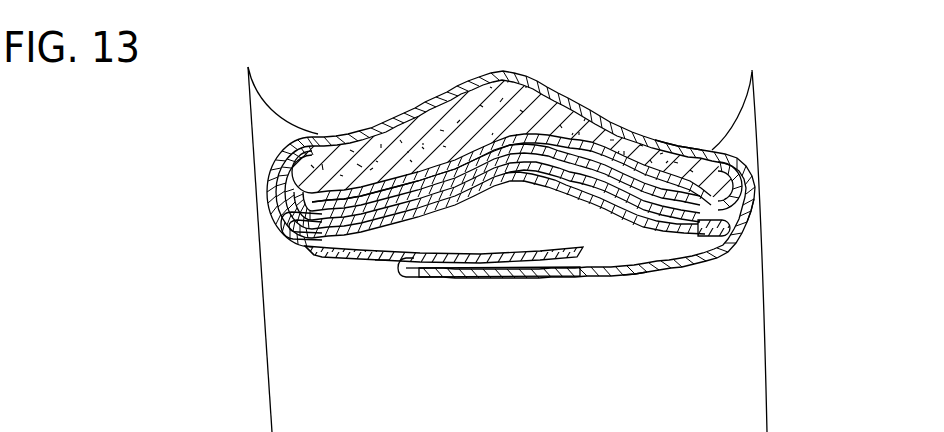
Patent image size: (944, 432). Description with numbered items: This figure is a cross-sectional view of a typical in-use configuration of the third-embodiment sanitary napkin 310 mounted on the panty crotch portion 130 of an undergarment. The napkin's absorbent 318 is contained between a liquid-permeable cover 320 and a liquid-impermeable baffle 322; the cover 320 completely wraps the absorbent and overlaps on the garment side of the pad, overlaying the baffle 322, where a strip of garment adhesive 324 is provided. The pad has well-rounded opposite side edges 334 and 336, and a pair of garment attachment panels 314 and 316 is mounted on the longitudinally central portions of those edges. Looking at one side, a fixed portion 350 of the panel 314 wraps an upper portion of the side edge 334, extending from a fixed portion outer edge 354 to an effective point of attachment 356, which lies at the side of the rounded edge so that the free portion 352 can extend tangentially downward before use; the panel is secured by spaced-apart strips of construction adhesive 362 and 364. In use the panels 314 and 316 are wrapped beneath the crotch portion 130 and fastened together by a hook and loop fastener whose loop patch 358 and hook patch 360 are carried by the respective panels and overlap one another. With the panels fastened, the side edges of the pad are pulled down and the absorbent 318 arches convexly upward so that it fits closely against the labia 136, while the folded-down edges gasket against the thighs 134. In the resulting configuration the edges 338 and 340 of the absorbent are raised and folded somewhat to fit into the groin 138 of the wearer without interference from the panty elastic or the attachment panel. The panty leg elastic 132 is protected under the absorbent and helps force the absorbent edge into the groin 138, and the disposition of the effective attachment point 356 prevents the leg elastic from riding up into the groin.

The panty crotch portion 130 is at (617, 213).
The panty leg elastic 132 is at (307, 247).
The thighs 134 is at (266, 357).
The labia 136 is at (427, 98).
The groin 138 is at (248, 77).
The sanitary napkin 310 is at (698, 88).
The garment attachment panel 314 is at (378, 278).
The garment attachment panel 316 is at (644, 288).
The absorbent 318 is at (512, 84).
The liquid-permeable cover 320 is at (467, 86).
The liquid-impermeable baffle 322 is at (580, 157).
The garment adhesive 324 is at (512, 172).
The side edge 334 is at (262, 218).
The side edge 336 is at (765, 194).
The edge of the absorbent 338 is at (297, 167).
The edge of the absorbent 340 is at (717, 173).
The fixed portion 350 is at (267, 160).
The free portion 352 is at (360, 252).
The fixed portion outer edge 354 is at (320, 132).
The effective point of attachment 356 is at (277, 198).
The loop patch 358 is at (398, 270).
The hook patch 360 is at (527, 278).
The construction adhesive 362 is at (283, 142).
The construction adhesive 364 is at (273, 187).